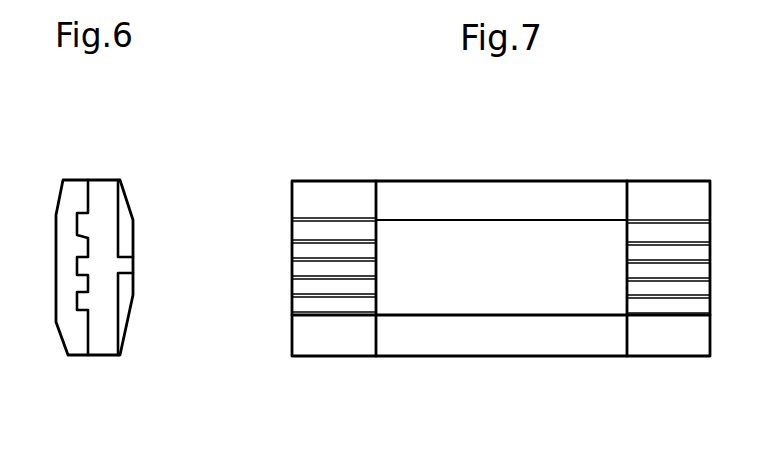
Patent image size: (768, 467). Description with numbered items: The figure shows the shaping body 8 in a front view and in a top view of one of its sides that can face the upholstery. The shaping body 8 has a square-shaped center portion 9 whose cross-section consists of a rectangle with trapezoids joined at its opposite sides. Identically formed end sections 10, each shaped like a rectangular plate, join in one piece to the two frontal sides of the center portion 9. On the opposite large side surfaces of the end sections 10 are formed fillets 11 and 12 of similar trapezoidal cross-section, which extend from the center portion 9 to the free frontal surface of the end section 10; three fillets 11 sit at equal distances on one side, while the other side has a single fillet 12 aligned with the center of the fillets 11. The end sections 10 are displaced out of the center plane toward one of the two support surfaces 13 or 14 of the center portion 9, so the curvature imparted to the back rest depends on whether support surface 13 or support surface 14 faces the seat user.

In FIG. 6, the shaping body 8 is at (121, 181).
In FIG. 7, the shaping body 8 is at (497, 360).
In FIG. 6, the center portion 9 is at (135, 228).
In FIG. 7, the center portion 9 is at (456, 298).
In FIG. 7, the end sections 10 is at (291, 325).
In FIG. 6, the fillets 11 is at (78, 263).
In FIG. 7, the fillets 11 is at (304, 221).
In FIG. 6, the fillet 12 is at (135, 257).
In FIG. 6, the support surface 13 is at (135, 297).
In FIG. 6, the support surface 14 is at (52, 257).
In FIG. 7, the support surface 14 is at (443, 203).